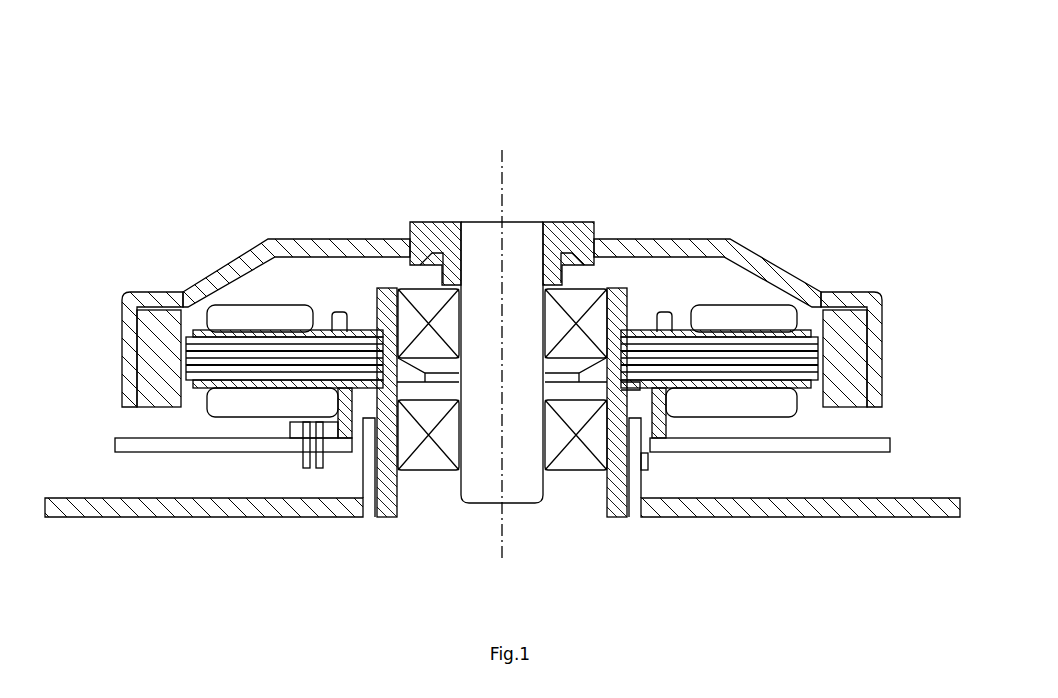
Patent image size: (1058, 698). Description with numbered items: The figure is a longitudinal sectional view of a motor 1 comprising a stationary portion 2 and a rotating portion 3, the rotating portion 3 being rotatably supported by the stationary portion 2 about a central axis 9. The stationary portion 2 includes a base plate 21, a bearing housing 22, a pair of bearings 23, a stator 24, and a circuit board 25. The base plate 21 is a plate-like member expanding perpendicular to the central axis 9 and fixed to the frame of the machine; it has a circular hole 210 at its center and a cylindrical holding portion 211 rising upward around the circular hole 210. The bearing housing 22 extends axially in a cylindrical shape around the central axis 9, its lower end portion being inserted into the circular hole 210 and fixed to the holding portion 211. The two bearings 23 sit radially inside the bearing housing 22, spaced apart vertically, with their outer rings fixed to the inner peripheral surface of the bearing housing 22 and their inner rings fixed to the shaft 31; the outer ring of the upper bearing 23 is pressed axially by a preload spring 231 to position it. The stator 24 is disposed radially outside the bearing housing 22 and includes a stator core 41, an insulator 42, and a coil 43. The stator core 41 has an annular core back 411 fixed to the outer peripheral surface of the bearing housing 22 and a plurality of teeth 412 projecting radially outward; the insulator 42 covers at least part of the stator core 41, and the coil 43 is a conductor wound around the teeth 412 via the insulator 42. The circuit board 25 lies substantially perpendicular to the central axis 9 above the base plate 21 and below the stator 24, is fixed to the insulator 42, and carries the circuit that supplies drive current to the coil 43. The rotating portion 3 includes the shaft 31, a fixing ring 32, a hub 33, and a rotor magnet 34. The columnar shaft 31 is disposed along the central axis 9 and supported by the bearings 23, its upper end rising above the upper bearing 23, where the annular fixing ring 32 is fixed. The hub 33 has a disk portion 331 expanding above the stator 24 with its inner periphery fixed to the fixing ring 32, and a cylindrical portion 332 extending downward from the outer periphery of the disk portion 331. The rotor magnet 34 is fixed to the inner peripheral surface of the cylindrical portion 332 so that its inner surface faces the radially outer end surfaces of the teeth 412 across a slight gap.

The motor 1 is at (415, 108).
The stationary portion 2 is at (728, 538).
The rotating portion 3 is at (505, 268).
The central axis 9 is at (505, 167).
The base plate 21 is at (225, 510).
The bearing housing 22 is at (618, 476).
The bearings 23 is at (575, 306).
The stator 24 is at (502, 299).
The circuit board 25 is at (772, 445).
The shaft 31 is at (483, 240).
The fixing ring 32 is at (420, 233).
The hub 33 is at (502, 268).
The rotor magnet 34 is at (155, 367).
The stator core 41 is at (502, 289).
The insulator 42 is at (665, 325).
The coil 43 is at (735, 318).
The circular hole 210 is at (424, 486).
The holding portion 211 is at (367, 467).
The preload spring 231 is at (652, 393).
The disk portion 331 is at (502, 238).
The cylindrical portion 332 is at (150, 315).
The core back 411 is at (357, 357).
The teeth 412 is at (267, 353).